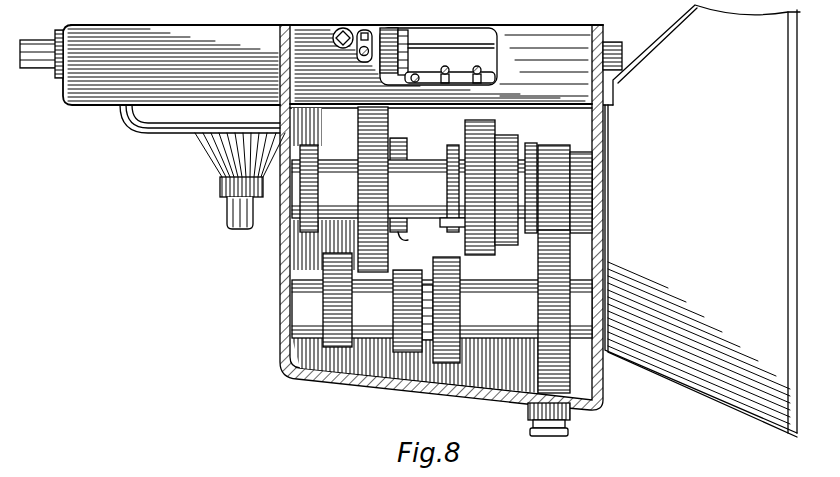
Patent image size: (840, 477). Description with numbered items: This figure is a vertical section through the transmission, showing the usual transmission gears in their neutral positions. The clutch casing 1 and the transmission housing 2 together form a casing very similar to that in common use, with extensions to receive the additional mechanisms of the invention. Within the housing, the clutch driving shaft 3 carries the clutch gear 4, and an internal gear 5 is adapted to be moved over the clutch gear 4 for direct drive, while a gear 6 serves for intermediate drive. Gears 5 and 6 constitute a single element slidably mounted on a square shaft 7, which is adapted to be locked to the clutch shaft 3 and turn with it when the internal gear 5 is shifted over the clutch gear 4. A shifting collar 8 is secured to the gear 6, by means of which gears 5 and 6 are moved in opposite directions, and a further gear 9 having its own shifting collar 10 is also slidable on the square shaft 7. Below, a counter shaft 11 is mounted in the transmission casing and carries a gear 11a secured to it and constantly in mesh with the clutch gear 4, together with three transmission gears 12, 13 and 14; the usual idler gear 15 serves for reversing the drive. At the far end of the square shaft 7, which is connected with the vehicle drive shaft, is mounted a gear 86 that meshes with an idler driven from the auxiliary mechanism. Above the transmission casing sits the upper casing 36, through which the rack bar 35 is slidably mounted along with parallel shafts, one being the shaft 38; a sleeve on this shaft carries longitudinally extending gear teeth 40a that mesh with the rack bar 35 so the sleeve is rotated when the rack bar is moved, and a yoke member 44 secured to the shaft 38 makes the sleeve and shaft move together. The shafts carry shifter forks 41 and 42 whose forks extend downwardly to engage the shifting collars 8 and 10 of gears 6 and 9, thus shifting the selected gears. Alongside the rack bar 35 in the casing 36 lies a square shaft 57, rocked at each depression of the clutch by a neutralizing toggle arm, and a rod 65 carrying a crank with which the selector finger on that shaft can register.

The clutch casing 1 is at (701, 221).
The transmission housing 2 is at (280, 256).
The clutch driving shaft 3 is at (583, 160).
The clutch gear 4 is at (550, 160).
The internal gear 5 is at (518, 134).
The intermediate drive gear 6 is at (495, 122).
The square shaft 7 is at (423, 170).
The shifting collar 8 is at (447, 220).
The gear 9 is at (358, 133).
The shifting collar 10 is at (412, 243).
The counter shaft 11 is at (500, 328).
The counter shaft gear 11a is at (604, 260).
The transmission gear 12 is at (452, 380).
The transmission gear 13 is at (412, 350).
The transmission gear 14 is at (338, 345).
The idler gear 15 is at (311, 226).
The rack bar 35 is at (365, 31).
The upper casing 36 is at (118, 88).
The shaft 38 is at (37, 60).
The gear teeth 40a is at (386, 42).
The shifter fork 41 is at (452, 145).
The shifter fork 42 is at (448, 43).
The yoke member 44 is at (403, 45).
The square shaft 57 is at (335, 29).
The rod 65 is at (360, 55).
The gear 86 is at (280, 238).